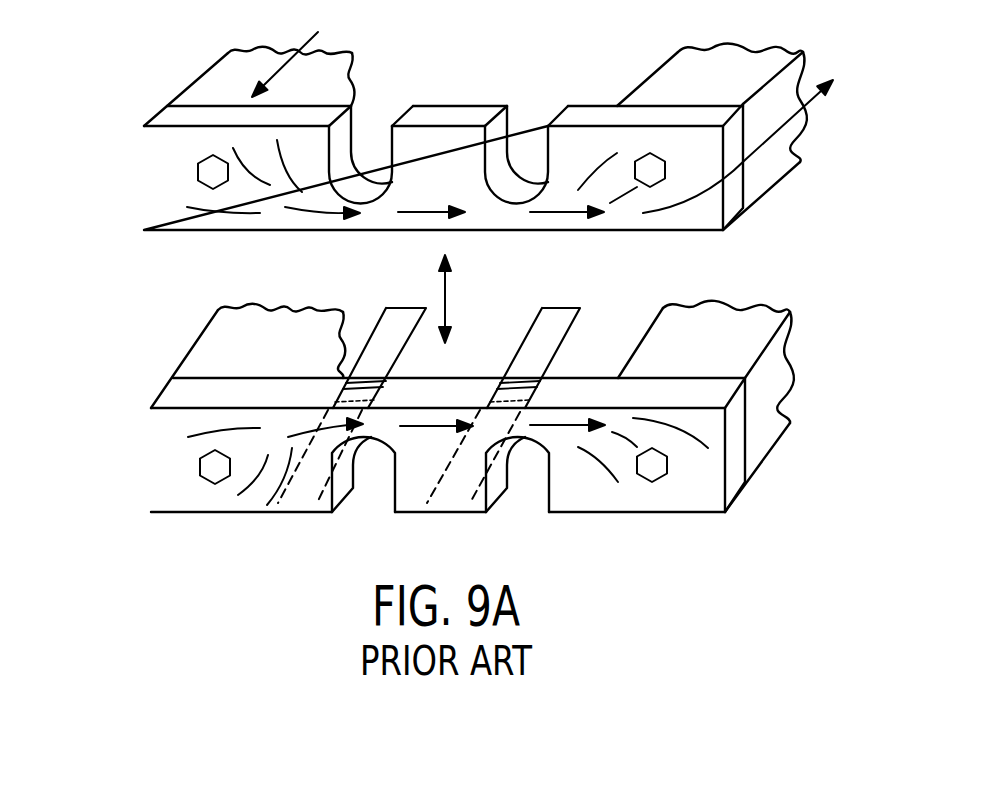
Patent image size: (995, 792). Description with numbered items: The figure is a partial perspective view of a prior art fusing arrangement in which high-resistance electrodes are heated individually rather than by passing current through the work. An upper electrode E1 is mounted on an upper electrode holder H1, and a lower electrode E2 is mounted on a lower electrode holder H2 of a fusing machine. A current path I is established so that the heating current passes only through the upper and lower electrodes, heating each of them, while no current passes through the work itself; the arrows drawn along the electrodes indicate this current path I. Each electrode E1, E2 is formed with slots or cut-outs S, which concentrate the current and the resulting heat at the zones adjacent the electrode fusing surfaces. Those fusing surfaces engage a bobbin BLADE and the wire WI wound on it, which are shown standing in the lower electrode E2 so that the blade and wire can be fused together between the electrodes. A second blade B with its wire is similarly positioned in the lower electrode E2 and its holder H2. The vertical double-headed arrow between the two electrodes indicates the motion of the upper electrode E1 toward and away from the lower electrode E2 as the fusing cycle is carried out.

The electrode holder H1 is at (342, 82).
The electrode holder H2 is at (762, 430).
The electrode E1 is at (144, 166).
The electrode E2 is at (151, 477).
The slot or cut-out S is at (375, 135).
The current path I is at (776, 136).
The bobbin blade BLADE is at (397, 333).
The blade B is at (540, 338).
The wire WI is at (560, 377).